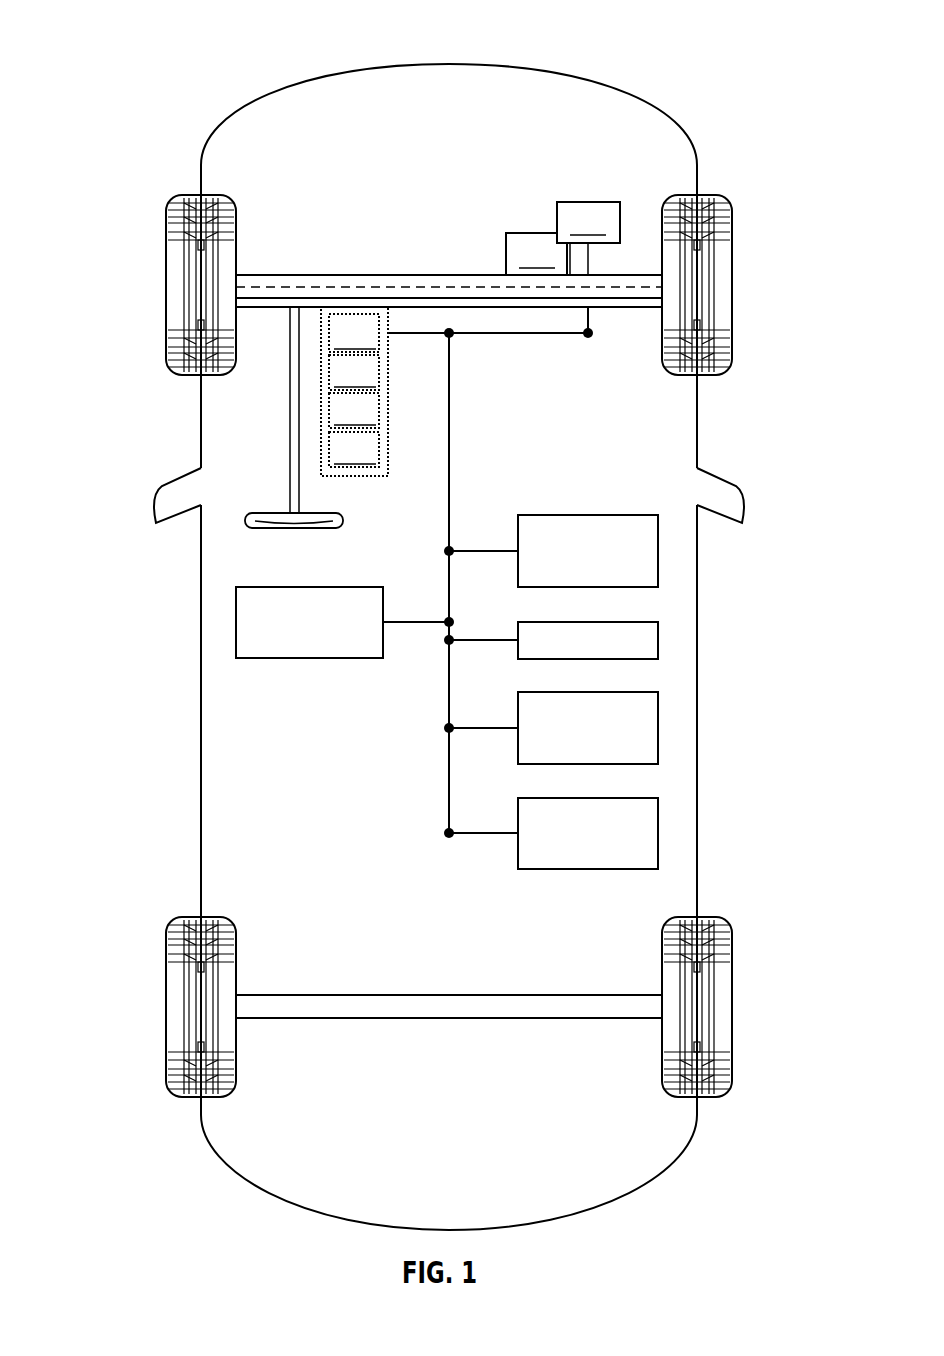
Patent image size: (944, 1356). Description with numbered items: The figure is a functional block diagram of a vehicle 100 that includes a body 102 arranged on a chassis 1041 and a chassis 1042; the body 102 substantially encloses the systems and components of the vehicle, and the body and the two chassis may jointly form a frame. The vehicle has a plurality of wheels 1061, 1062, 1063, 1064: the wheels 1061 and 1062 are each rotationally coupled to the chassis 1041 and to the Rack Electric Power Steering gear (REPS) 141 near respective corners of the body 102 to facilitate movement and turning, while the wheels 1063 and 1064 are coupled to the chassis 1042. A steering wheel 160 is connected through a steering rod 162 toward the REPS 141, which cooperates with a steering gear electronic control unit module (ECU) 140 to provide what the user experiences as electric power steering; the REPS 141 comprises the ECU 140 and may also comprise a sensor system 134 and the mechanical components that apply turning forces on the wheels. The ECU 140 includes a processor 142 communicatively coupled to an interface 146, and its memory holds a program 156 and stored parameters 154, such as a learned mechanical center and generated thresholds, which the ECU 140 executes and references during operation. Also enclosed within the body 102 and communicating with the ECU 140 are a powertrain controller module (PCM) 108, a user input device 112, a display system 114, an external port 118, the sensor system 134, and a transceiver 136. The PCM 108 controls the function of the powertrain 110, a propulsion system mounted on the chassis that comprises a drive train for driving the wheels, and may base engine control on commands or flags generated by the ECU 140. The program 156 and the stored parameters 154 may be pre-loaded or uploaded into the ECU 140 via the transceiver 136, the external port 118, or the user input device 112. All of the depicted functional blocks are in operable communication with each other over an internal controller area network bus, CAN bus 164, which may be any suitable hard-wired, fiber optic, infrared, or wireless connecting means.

The vehicle 100 is at (133, 43).
The body 102 is at (200, 645).
The chassis 1041 is at (315, 275).
The chassis 1042 is at (373, 995).
The wheel 1061 is at (166, 285).
The wheel 1062 is at (732, 285).
The wheel 1063 is at (166, 1005).
The wheel 1064 is at (732, 1005).
The powertrain controller module 108 is at (588, 238).
The powertrain 110 is at (536, 254).
The user input device 112 is at (593, 798).
The display system 114 is at (593, 515).
The external port 118 is at (593, 622).
The sensor system 134 is at (593, 692).
The transceiver 136 is at (308, 587).
The steering gear electronic control unit module 140 is at (388, 437).
The rack electric power steering gear 141 is at (354, 351).
The processor 142 is at (354, 410).
The interface 146 is at (354, 449).
The stored parameters 154 is at (354, 333).
The program 156 is at (354, 372).
The steering wheel 160 is at (284, 513).
The steering rod 162 is at (300, 477).
The CAN bus 164 is at (449, 702).